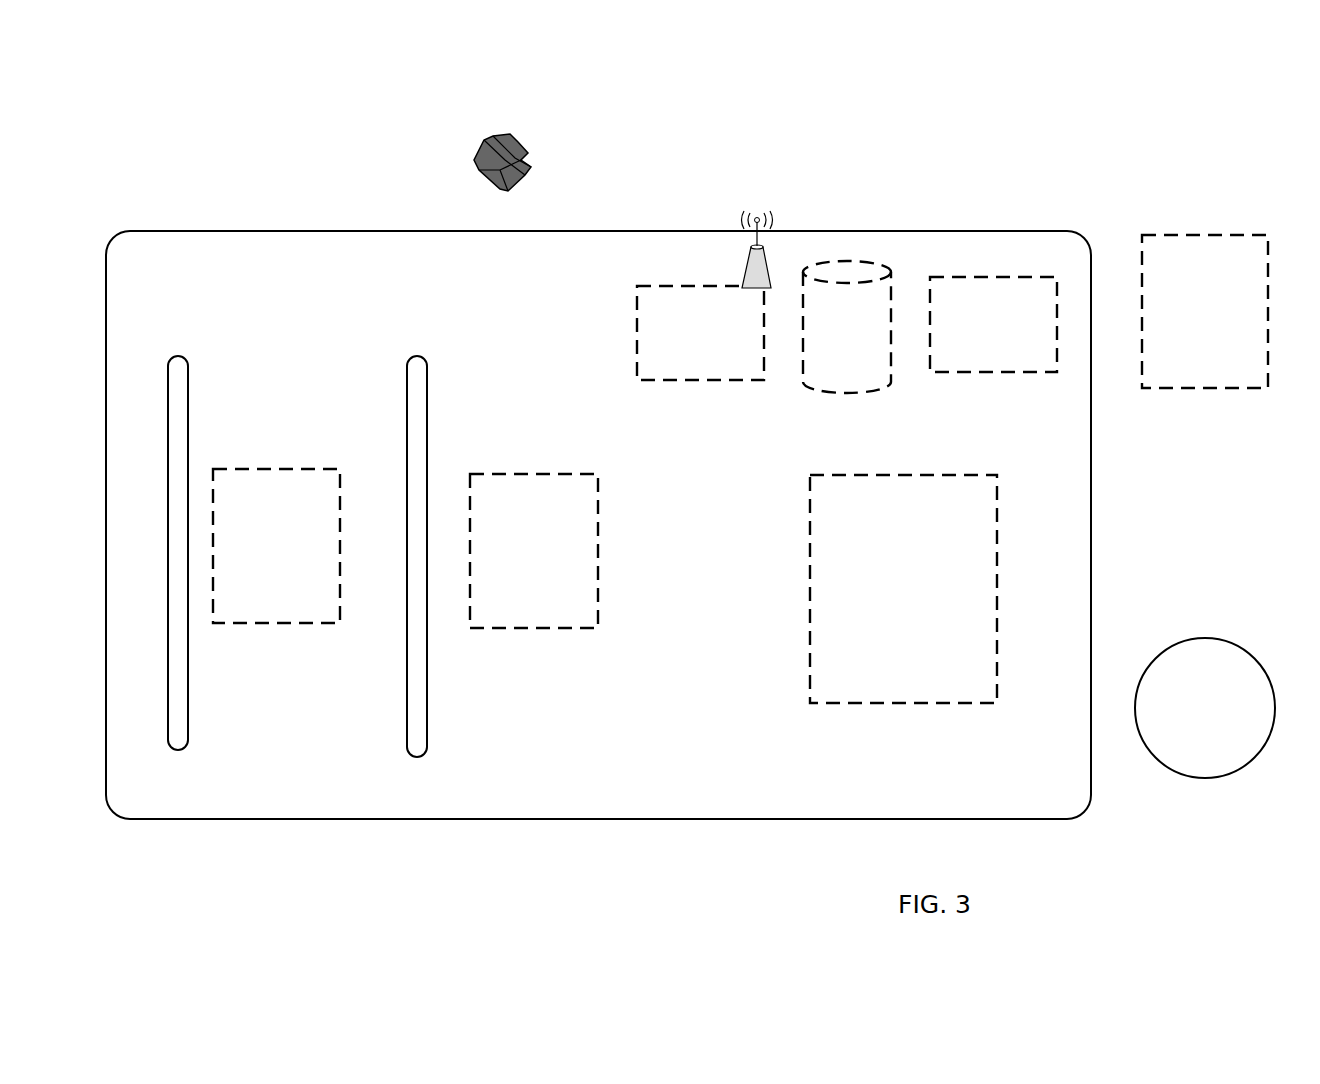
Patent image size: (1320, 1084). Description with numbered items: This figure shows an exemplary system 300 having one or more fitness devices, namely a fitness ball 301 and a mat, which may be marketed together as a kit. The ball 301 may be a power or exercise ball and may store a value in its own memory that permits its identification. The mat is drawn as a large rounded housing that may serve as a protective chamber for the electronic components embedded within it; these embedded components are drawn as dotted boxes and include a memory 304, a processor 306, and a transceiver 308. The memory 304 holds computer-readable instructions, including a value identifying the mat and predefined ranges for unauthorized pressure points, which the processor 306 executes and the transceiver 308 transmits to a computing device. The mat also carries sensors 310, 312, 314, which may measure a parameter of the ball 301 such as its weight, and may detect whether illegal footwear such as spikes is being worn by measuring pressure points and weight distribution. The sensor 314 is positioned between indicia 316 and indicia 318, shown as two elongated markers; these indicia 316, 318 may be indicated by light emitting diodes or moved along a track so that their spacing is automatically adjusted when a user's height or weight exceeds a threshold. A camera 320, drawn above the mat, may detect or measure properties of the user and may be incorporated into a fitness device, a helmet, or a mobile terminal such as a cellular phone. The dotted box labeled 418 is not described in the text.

The system 300 is at (258, 133).
The fitness ball 301 is at (1187, 717).
The memory 304 is at (829, 336).
The processor 306 is at (974, 334).
The transceiver 308 is at (679, 339).
The sensor 310 is at (888, 584).
The sensor 312 is at (518, 561).
The sensor 314 is at (254, 556).
The indicia 316 is at (204, 418).
The indicia 318 is at (451, 418).
The camera 320 is at (539, 133).
The remote server 418 is at (1187, 322).